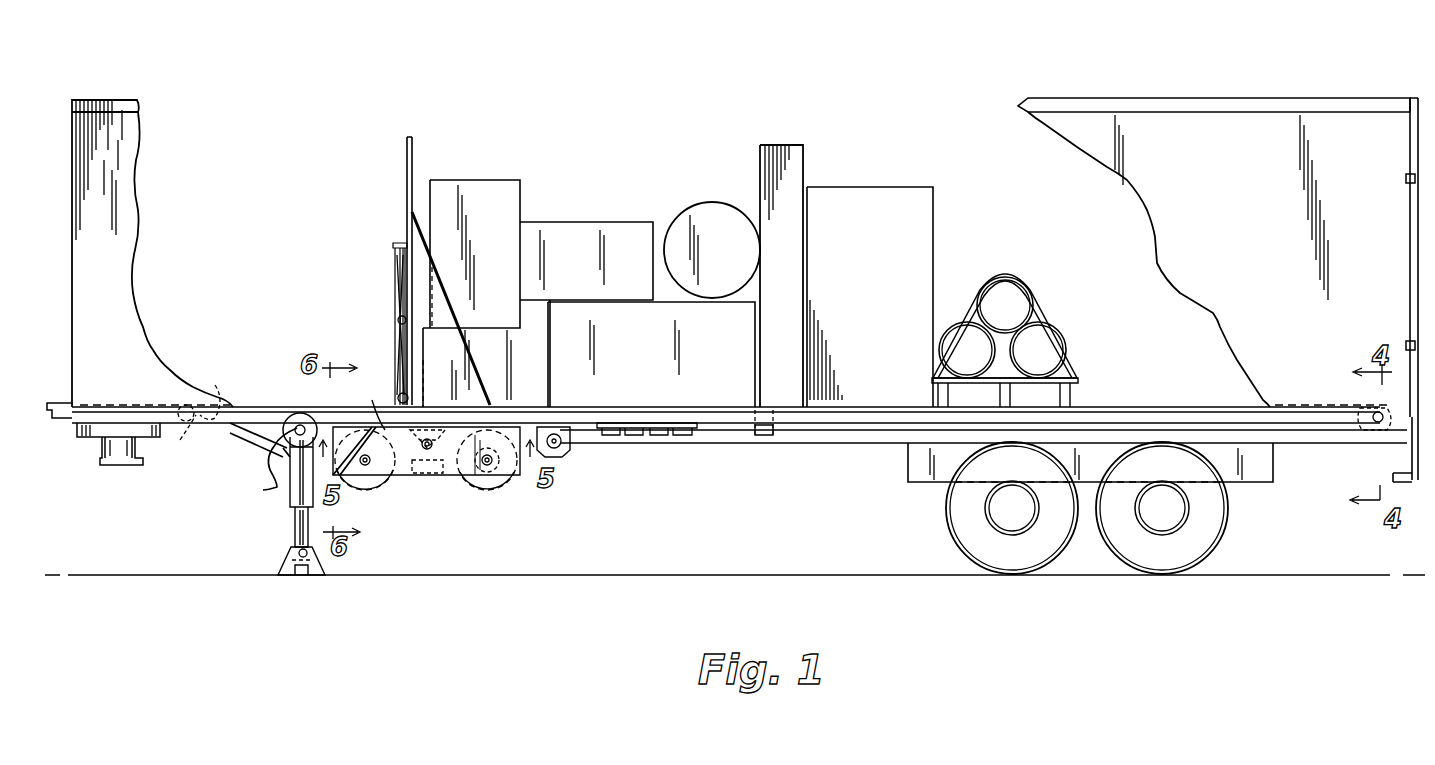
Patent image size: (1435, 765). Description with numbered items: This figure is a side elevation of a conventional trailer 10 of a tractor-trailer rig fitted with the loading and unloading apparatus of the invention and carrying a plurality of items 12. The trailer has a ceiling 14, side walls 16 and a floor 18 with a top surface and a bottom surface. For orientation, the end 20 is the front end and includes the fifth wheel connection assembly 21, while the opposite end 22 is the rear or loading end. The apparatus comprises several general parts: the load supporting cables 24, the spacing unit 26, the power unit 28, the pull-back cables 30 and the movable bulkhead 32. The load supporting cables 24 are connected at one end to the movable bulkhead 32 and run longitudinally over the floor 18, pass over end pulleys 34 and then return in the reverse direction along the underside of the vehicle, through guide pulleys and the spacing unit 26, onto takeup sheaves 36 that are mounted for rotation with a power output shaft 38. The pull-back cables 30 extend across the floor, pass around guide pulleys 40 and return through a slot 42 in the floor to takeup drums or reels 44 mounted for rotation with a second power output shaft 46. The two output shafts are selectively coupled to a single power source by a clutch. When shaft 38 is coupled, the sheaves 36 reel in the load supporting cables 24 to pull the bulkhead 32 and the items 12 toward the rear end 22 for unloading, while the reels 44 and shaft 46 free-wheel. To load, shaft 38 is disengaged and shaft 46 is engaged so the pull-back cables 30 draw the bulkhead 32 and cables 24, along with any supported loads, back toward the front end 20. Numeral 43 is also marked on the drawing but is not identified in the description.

The trailer 10 is at (1233, 92).
The items 12 is at (860, 172).
The ceiling 14 is at (1330, 104).
The side walls 16 is at (1240, 237).
The floor 18 is at (1290, 414).
The front end 20 is at (75, 112).
The fifth wheel connection assembly 21 is at (103, 438).
The rear end 22 is at (1406, 182).
The load supporting cables 24 is at (1148, 407).
The spacing unit 26 is at (661, 450).
The power unit 28 is at (432, 483).
The pull-back cables 30 is at (252, 405).
The movable bulkhead 32 is at (382, 293).
The end pulleys 34 is at (1375, 432).
The takeup sheaves 36 is at (504, 488).
The power output shaft 38 is at (483, 482).
The guide pulleys 40 is at (50, 403).
The slot 42 is at (169, 436).
The cable guide 43 is at (218, 388).
The takeup drums or reels 44 is at (365, 488).
The power output shaft 46 is at (380, 410).